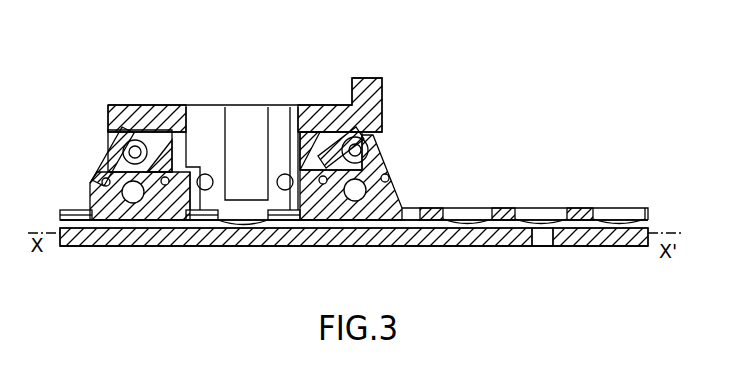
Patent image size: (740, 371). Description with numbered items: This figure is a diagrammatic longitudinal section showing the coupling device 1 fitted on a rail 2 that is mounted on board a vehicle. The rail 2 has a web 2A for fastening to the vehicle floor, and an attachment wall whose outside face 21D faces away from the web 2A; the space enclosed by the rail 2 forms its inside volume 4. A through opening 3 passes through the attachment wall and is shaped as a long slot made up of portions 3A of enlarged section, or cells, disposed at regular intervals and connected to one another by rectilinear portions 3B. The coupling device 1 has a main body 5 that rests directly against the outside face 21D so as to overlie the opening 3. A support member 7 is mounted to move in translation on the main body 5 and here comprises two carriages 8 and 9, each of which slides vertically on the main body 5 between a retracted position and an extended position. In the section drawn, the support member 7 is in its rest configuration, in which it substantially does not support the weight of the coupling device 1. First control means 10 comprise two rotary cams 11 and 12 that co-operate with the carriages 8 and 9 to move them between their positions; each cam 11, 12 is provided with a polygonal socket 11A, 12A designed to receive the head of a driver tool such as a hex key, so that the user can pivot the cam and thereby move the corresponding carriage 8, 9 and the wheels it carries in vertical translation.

The coupling device 1 is at (138, 105).
The rail 2 is at (86, 240).
The web 2A is at (598, 247).
The through opening 3 is at (354, 212).
The portions of enlarged section 3A is at (462, 214).
The rectilinear portions 3B is at (425, 207).
The inside volume 4 is at (646, 223).
The main body 5 is at (335, 118).
The support member 7 is at (96, 175).
The carriage 8 is at (312, 222).
The carriage 9 is at (150, 222).
The first control means 10 is at (95, 182).
The rotary cam 11 is at (330, 157).
The polygonal socket 11A is at (360, 152).
The rotary cam 12 is at (152, 160).
The polygonal socket 12A is at (132, 151).
The outside face 21D is at (530, 210).